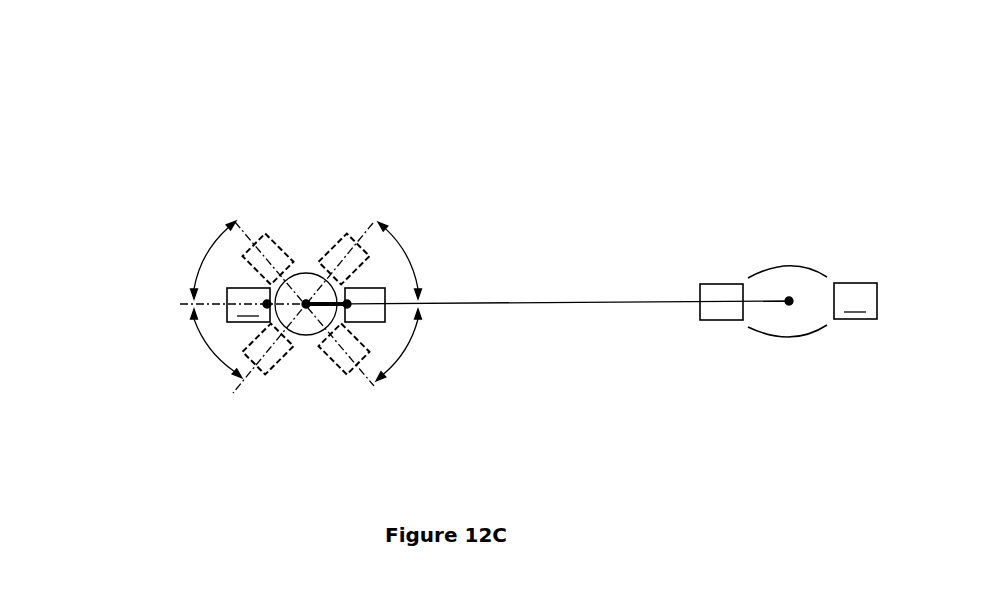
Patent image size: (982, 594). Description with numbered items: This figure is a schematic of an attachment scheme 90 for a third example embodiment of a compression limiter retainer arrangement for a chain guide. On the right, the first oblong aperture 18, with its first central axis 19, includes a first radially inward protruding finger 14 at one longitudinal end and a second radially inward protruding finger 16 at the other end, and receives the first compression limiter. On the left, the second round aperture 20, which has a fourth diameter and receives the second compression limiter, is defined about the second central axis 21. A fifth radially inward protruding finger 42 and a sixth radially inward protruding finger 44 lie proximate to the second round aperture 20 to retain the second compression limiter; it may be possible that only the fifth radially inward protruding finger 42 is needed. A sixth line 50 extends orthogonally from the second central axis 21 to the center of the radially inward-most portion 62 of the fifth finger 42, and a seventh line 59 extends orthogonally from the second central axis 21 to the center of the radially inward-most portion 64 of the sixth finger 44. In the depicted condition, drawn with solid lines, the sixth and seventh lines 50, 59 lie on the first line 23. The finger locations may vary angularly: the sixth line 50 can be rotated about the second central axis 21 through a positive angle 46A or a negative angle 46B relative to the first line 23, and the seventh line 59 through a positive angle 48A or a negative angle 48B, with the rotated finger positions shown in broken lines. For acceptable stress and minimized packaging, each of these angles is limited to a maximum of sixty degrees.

The attachment scheme 90 is at (755, 150).
The sixth line 50 is at (293, 302).
The second round aperture 20 is at (308, 300).
The positive angle 46A is at (235, 222).
The negative angle 46B is at (240, 376).
The positive angle 48A is at (414, 253).
The negative angle 48B is at (410, 354).
The radially inward-most portion 62 is at (262, 290).
The radially inward-most portion 64 is at (350, 288).
The fifth radially inward protruding finger 42 is at (248, 305).
The sixth radially inward protruding finger 44 is at (385, 322).
The second central axis 21 is at (306, 310).
The seventh line 59 is at (315, 310).
The first line 23 is at (583, 302).
The first radially inward protruding finger 14 is at (699, 291).
The first central axis 19 is at (788, 298).
The second radially inward protruding finger 16 is at (855, 301).
The first oblong aperture 18 is at (790, 338).